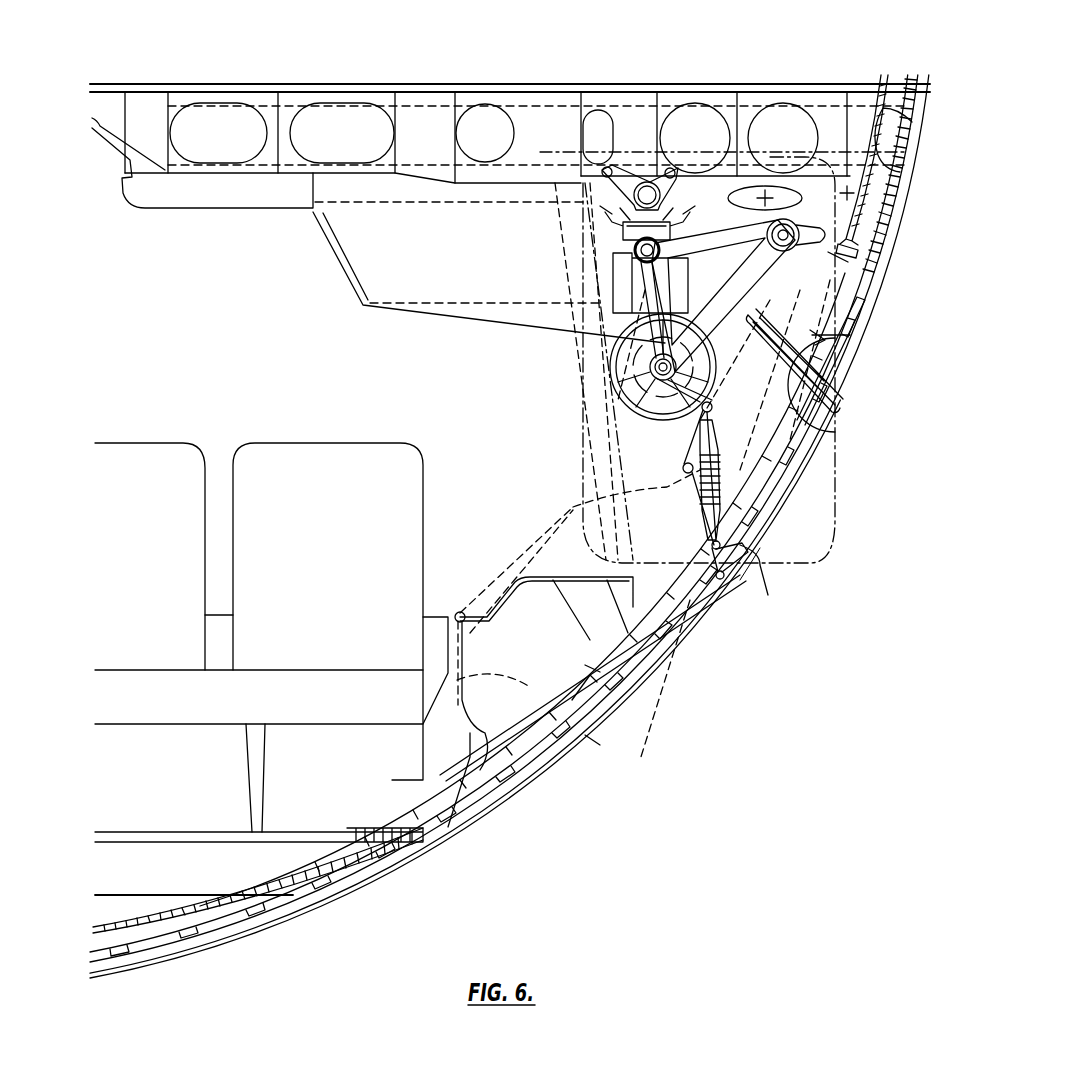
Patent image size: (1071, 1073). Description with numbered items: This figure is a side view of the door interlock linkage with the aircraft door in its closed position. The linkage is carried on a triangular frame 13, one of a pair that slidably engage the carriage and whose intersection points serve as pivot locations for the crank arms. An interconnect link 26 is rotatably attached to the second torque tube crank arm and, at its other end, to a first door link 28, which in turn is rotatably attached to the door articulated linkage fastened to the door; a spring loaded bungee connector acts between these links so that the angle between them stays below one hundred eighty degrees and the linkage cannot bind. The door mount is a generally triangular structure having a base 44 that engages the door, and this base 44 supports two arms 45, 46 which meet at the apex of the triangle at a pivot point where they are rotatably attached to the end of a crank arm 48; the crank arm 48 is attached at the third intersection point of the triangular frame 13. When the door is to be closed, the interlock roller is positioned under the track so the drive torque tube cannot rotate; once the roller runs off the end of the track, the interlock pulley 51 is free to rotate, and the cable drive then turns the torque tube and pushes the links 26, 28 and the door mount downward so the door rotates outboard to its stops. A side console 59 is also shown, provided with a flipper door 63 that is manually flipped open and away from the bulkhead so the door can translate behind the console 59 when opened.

The triangular frame 13 is at (690, 185).
The interconnect link 26 is at (700, 500).
The first door link 28 is at (722, 473).
The base 44 is at (852, 360).
The arm 45 is at (790, 420).
The arm 46 is at (776, 358).
The crank arm 48 is at (780, 258).
The interlock pulley 51 is at (622, 378).
The side console 59 is at (592, 740).
The flipper door 63 is at (587, 673).